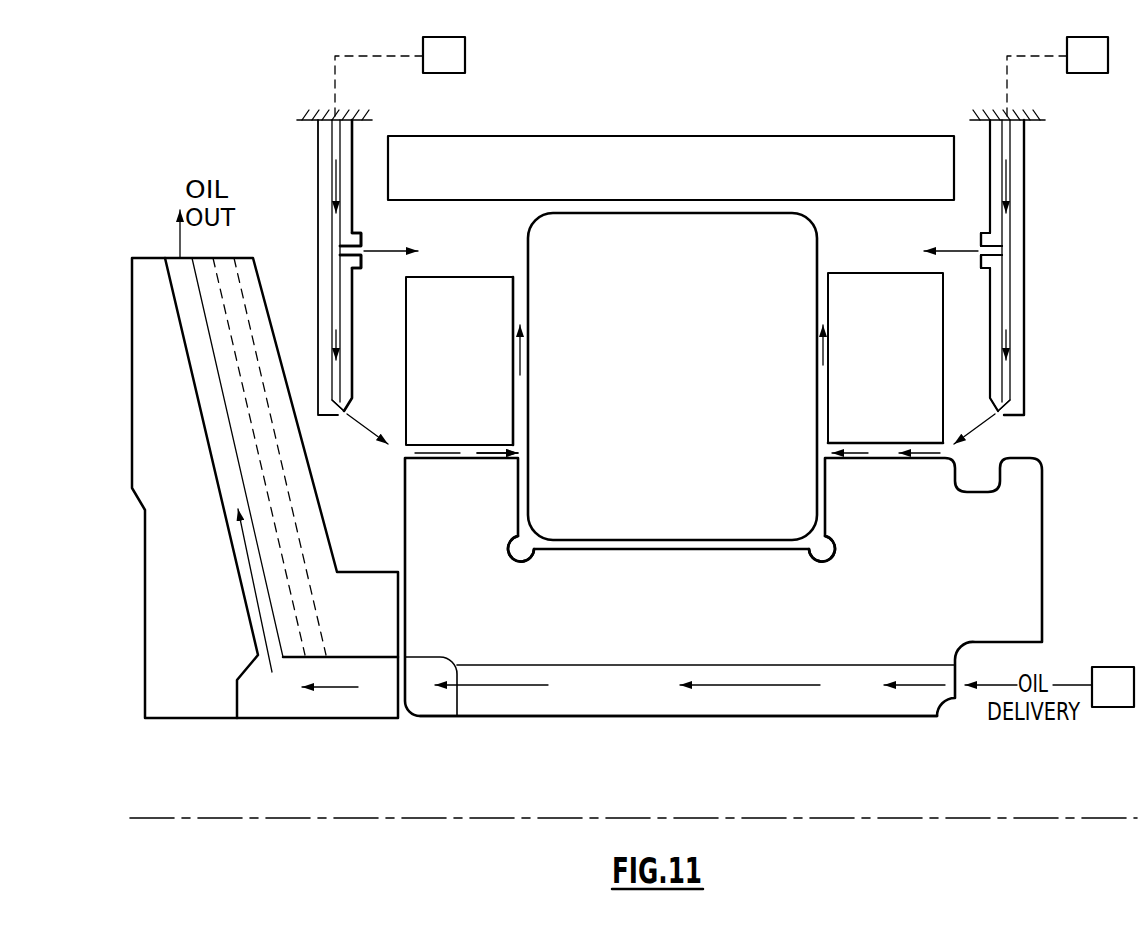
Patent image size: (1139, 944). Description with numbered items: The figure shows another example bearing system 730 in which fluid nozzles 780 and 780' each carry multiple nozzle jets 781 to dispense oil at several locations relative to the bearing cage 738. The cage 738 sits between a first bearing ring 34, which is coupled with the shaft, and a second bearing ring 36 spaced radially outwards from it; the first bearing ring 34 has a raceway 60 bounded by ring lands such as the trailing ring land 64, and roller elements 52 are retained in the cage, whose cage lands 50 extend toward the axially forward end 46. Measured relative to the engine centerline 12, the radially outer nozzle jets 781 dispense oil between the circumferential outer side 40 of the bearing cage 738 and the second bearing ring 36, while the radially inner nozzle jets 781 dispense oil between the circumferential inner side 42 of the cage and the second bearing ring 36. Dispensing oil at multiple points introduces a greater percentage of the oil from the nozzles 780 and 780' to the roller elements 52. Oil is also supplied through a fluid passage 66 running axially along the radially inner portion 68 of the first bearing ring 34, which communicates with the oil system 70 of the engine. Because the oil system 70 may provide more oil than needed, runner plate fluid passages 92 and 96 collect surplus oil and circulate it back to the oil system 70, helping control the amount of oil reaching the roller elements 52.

The engine centerline 12 is at (184, 820).
The first bearing ring 34 is at (1042, 540).
The second bearing ring 36 is at (850, 147).
The circumferential outer side 40 is at (894, 273).
The circumferential inner side 42 is at (888, 456).
The axially forward end 46 is at (945, 302).
The cage lands 50 is at (437, 400).
The roller elements 52 is at (797, 502).
The raceway 60 is at (822, 562).
The trailing ring land 64 is at (435, 488).
The fluid passage 66 is at (766, 698).
The radially inner portion 68 is at (706, 724).
The oil system 70 is at (465, 56).
The fluid passage 92 is at (202, 322).
The fluid passage 96 is at (248, 362).
The bearing system 730 is at (770, 110).
The bearing cage 738 is at (918, 352).
The fluid nozzle 780 is at (1008, 277).
The fluid nozzle 780' is at (373, 272).
The nozzle jets 781 is at (361, 240).